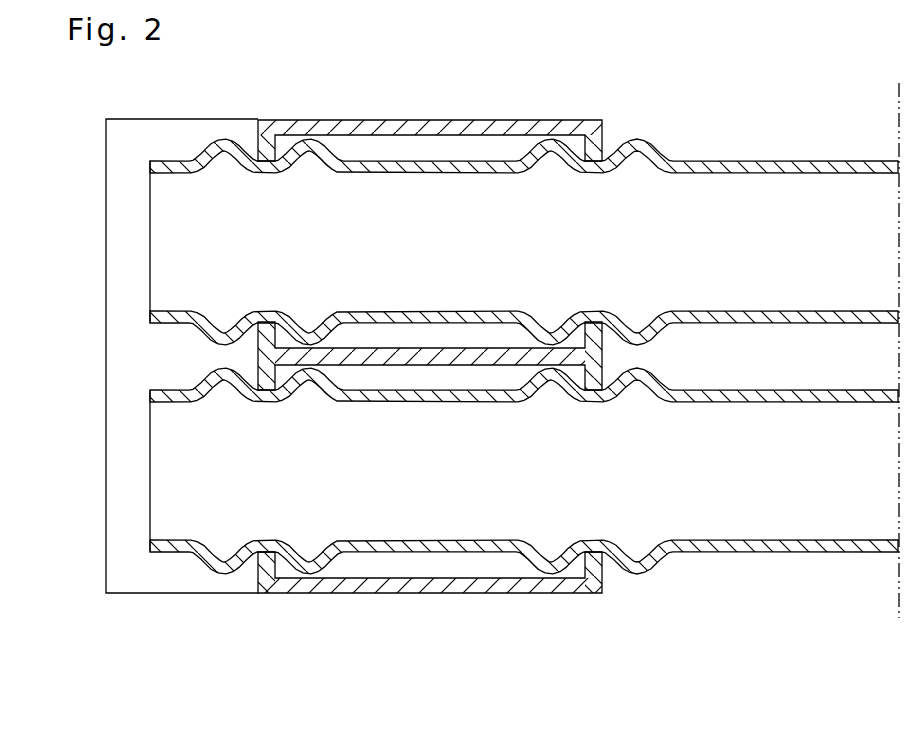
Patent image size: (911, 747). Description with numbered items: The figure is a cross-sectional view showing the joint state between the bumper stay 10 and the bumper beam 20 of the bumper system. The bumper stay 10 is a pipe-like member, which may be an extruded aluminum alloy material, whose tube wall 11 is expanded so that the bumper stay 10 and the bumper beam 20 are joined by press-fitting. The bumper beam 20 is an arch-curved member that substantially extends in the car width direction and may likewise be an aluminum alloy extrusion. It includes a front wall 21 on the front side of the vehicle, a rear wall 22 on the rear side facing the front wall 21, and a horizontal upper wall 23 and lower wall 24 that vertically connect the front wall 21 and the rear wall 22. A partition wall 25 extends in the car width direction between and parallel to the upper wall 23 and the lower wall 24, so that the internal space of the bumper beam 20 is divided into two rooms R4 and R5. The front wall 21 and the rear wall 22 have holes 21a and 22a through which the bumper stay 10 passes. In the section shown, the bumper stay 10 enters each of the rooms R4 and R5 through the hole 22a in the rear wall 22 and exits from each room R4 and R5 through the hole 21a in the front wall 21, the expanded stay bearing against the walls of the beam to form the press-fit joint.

The bumper stay 10 is at (524, 348).
The tube wall 11 is at (725, 160).
The bumper beam 20 is at (438, 358).
The front wall 21 is at (181, 573).
The hole 21a is at (258, 160).
The rear wall 22 is at (603, 573).
The hole 22a is at (605, 152).
The upper wall 23 is at (400, 120).
The lower wall 24 is at (387, 594).
The partition wall 25 is at (445, 362).
The room R4 is at (463, 146).
The room R5 is at (492, 575).